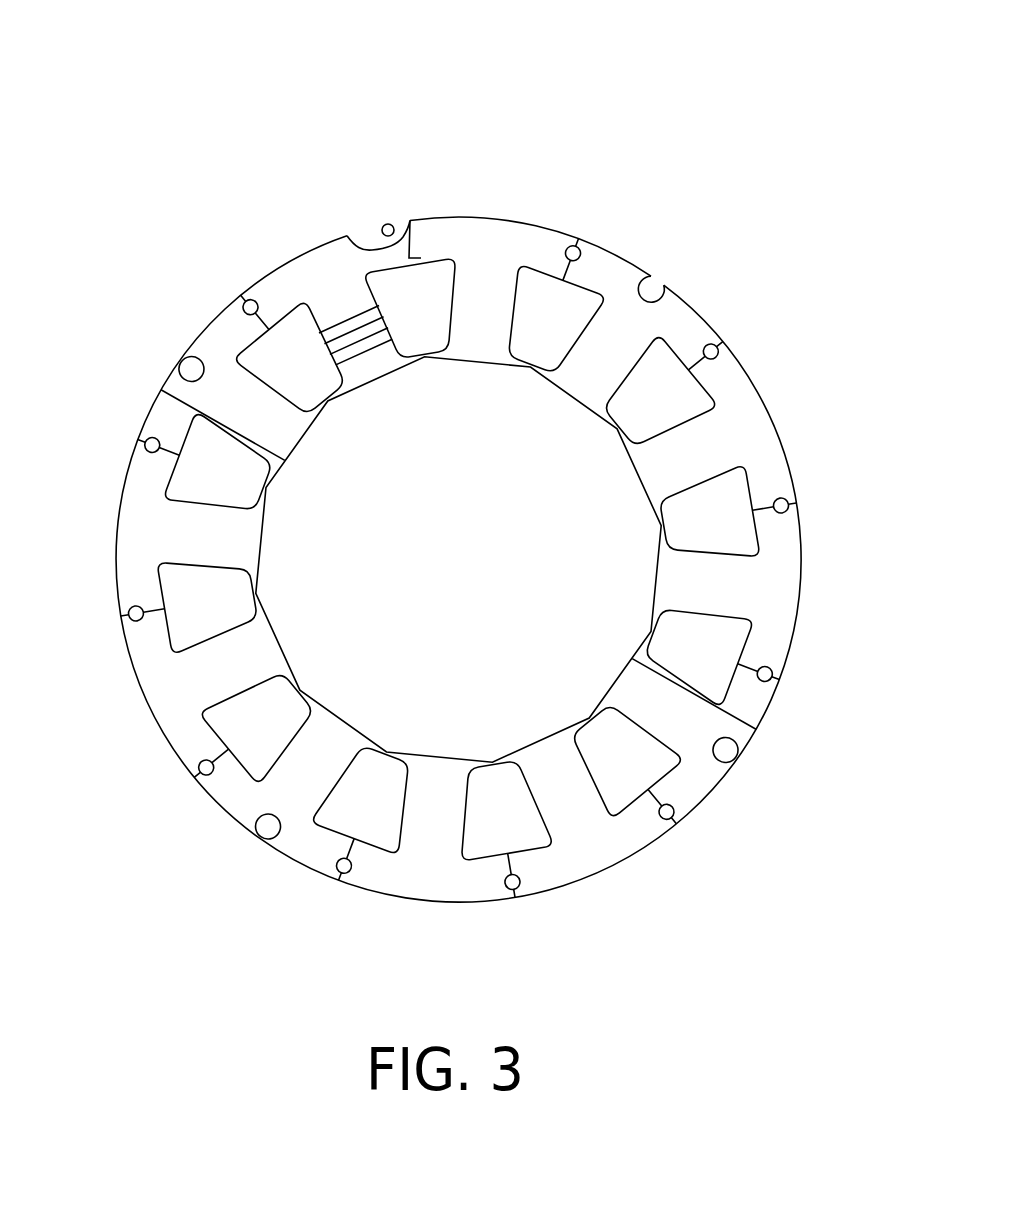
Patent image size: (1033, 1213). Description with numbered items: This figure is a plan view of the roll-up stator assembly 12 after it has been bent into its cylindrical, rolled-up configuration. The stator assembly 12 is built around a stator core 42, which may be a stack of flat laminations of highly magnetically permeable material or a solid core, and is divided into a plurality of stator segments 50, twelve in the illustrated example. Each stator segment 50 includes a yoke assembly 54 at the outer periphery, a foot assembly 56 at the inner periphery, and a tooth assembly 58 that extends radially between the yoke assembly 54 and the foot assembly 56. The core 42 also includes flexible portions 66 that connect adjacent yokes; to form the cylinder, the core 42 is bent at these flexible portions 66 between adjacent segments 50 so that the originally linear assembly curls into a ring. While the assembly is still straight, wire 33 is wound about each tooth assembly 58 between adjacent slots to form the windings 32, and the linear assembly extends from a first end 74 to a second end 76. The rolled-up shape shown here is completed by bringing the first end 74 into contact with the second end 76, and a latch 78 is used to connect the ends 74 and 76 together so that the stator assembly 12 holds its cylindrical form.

The stator assembly 12 is at (733, 68).
The stator core 42 is at (776, 203).
The windings 32 is at (302, 353).
The wire 33 is at (345, 320).
The stator segments 50 is at (118, 521).
The yoke assembly 54 is at (622, 865).
The foot assembly 56 is at (582, 724).
The tooth assembly 58 is at (600, 790).
The flexible portions 66 is at (128, 612).
The first end 74 is at (412, 246).
The second end 76 is at (362, 241).
The latch 78 is at (375, 224).